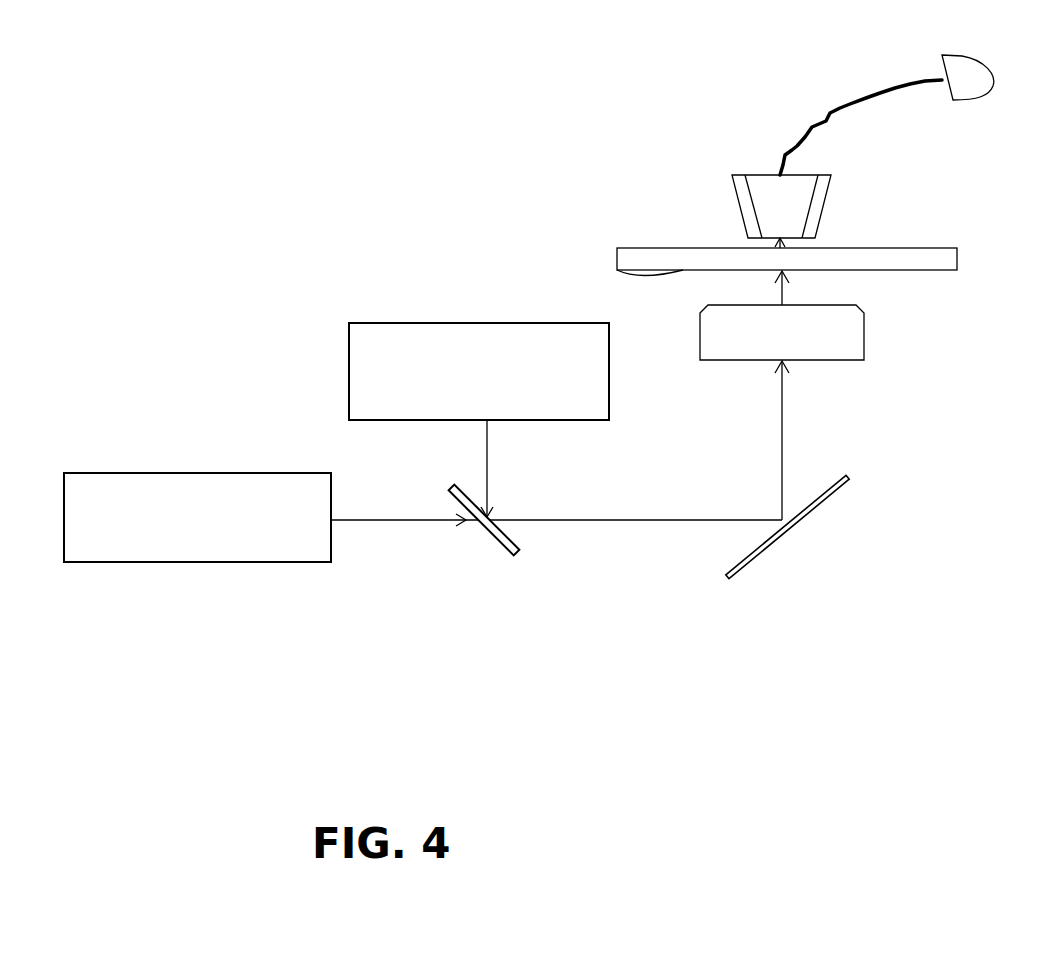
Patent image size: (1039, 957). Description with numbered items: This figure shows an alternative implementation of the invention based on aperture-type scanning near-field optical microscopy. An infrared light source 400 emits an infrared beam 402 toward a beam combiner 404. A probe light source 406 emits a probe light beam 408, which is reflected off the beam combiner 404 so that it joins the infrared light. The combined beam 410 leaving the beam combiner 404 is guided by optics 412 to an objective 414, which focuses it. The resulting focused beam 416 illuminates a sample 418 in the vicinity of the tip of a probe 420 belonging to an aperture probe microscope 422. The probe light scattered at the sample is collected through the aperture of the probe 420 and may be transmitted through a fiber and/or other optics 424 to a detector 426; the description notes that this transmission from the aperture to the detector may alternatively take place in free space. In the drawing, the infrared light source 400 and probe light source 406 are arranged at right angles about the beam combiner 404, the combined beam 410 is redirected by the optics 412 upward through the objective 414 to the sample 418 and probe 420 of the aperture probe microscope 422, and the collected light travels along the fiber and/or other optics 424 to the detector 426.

The infrared light source 400 is at (197, 517).
The infrared beam 402 is at (404, 537).
The beam combiner 404 is at (523, 538).
The probe light source 406 is at (479, 371).
The probe light beam 408 is at (509, 468).
The combined beam 410 is at (636, 512).
The optics 412 is at (800, 526).
The objective 414 is at (806, 412).
The focused beam 416 is at (804, 288).
The sample 418 is at (580, 297).
The probe 420 is at (808, 238).
The aperture probe microscope 422 is at (803, 211).
The fiber and/or other optics 424 is at (859, 127).
The detector 426 is at (987, 77).